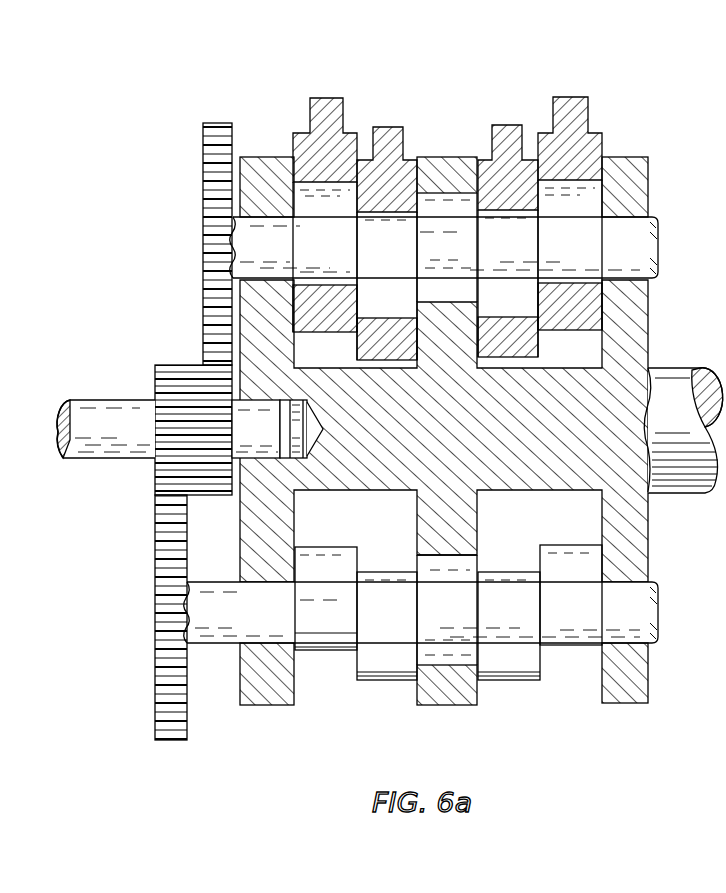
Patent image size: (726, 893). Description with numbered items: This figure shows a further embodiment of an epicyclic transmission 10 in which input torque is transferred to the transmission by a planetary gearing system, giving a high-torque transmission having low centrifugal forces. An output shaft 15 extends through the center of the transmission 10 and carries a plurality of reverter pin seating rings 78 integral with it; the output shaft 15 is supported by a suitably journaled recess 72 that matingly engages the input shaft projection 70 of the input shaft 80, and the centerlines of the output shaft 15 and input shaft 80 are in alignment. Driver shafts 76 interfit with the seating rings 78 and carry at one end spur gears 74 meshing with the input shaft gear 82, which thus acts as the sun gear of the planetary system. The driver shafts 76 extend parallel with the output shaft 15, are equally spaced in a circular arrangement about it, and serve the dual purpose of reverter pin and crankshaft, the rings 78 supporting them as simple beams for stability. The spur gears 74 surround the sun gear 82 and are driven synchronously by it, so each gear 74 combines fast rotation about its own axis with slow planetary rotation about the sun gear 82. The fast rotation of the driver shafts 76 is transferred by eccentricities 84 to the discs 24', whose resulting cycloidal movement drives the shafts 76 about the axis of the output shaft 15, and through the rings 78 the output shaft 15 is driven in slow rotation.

The transmission 10 is at (636, 136).
The output shaft 15 is at (676, 388).
The discs 24' is at (447, 206).
The input shaft projection 70 is at (268, 430).
The journaled recess 72 is at (302, 434).
The spur gears 74 is at (205, 178).
The driver shafts 76 is at (660, 247).
The reverter pin seating rings 78 is at (273, 690).
The input shaft 80 is at (118, 413).
The input shaft gear 82 is at (180, 369).
The eccentricities 84 is at (388, 682).